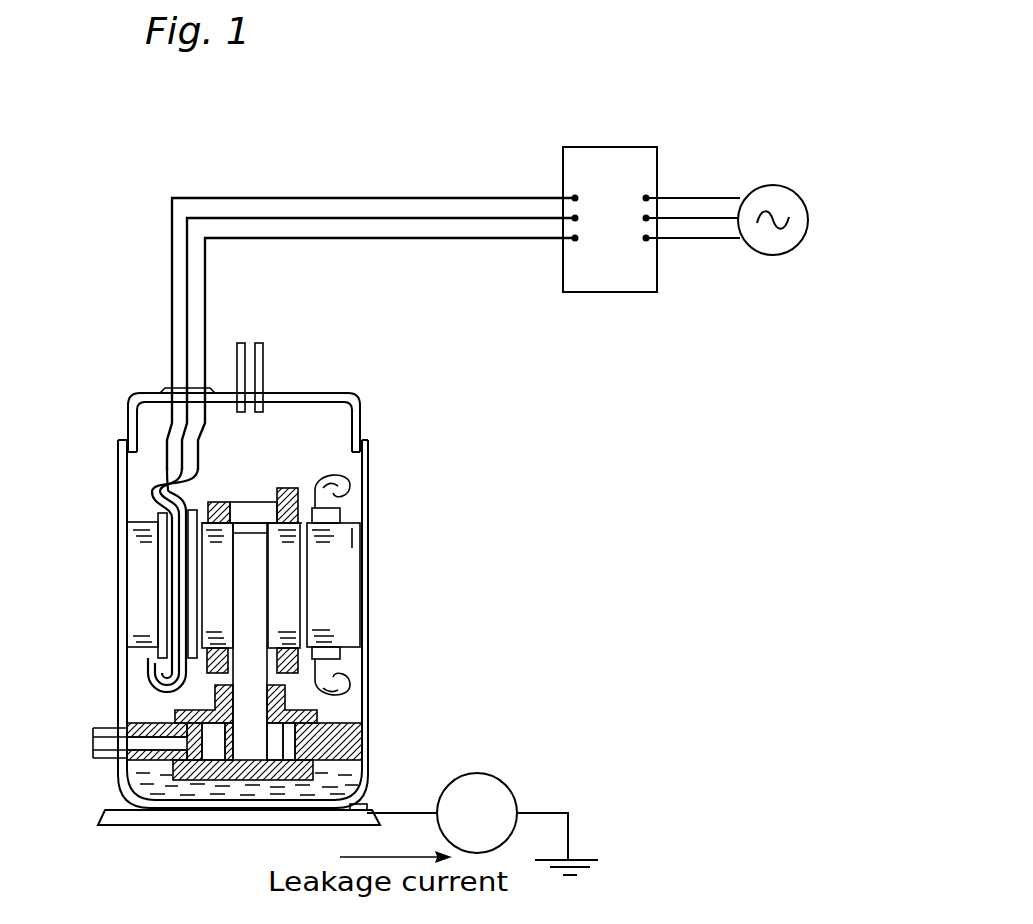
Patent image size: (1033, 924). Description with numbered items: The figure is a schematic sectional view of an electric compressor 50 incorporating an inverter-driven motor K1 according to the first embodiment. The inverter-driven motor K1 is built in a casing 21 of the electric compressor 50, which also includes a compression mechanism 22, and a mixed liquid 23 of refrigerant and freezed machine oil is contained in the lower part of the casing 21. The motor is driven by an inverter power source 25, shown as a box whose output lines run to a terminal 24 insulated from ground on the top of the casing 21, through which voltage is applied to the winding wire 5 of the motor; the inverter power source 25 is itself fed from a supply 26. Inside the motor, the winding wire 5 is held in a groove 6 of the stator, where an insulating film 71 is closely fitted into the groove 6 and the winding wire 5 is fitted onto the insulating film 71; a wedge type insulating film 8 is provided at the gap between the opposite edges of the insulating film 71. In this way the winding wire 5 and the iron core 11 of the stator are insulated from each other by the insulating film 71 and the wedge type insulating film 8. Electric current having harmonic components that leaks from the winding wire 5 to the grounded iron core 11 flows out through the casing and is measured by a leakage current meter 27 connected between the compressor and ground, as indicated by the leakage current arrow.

The winding wire 5 is at (153, 482).
The insulating film 71 is at (167, 540).
The wedge type insulating film 8 is at (190, 592).
The groove 6 is at (158, 612).
The iron core 11 is at (150, 630).
The casing 21 is at (358, 403).
The compression mechanism 22 is at (290, 746).
The mixed liquid 23 is at (348, 786).
The terminal 24 is at (173, 382).
The inverter power source 25 is at (643, 163).
The AC power source 26 is at (797, 192).
The leakage current meter 27 is at (510, 788).
The electric compressor 50 is at (400, 639).
The inverter-driven motor K1 is at (352, 540).